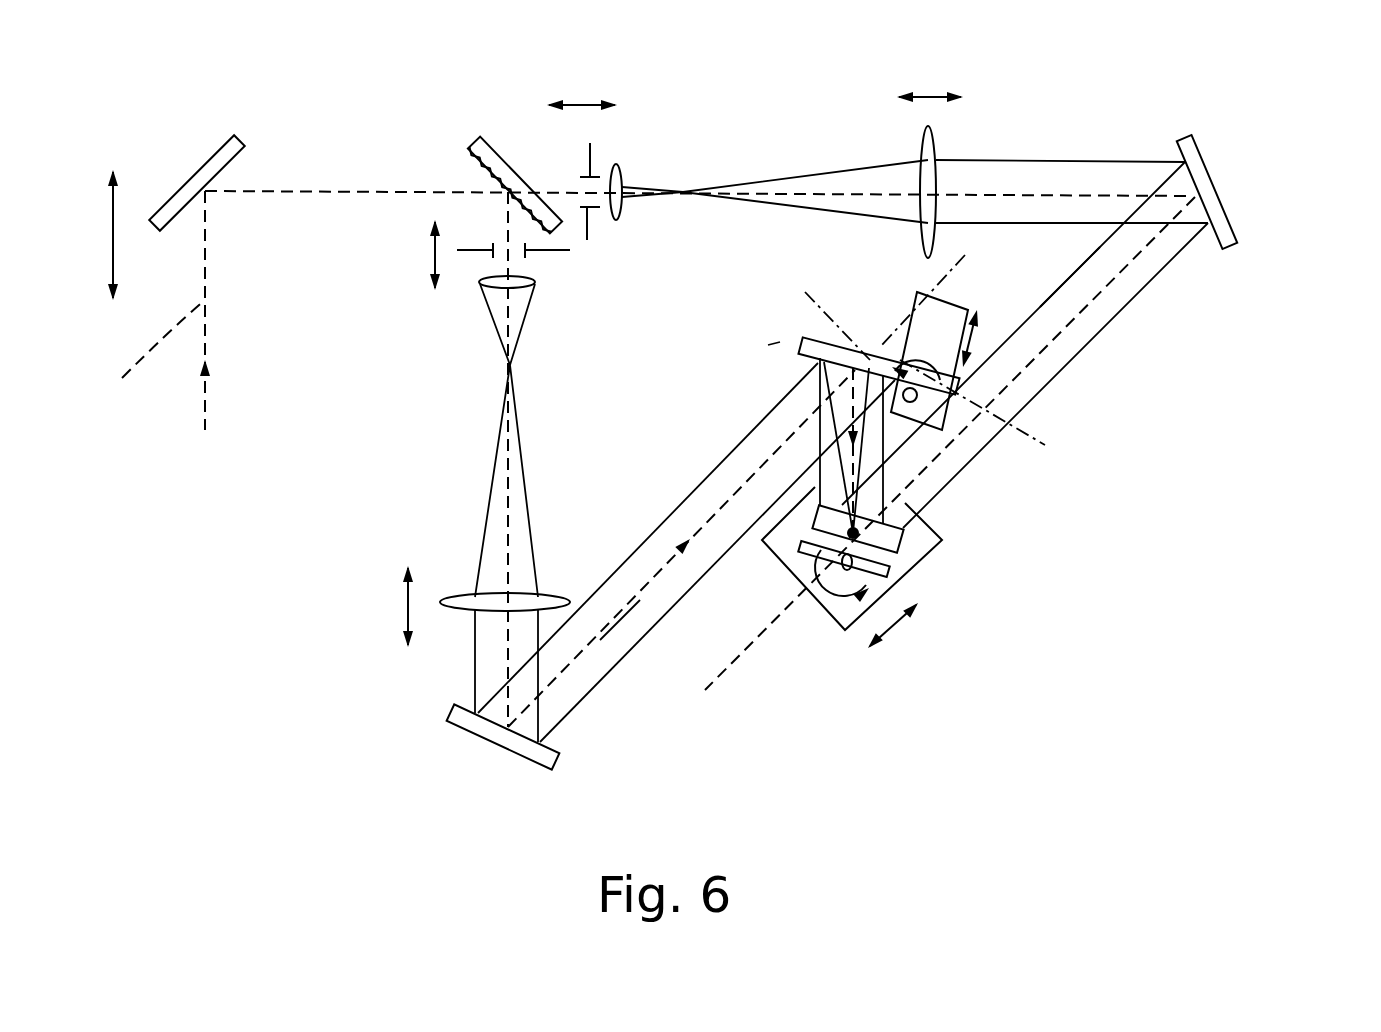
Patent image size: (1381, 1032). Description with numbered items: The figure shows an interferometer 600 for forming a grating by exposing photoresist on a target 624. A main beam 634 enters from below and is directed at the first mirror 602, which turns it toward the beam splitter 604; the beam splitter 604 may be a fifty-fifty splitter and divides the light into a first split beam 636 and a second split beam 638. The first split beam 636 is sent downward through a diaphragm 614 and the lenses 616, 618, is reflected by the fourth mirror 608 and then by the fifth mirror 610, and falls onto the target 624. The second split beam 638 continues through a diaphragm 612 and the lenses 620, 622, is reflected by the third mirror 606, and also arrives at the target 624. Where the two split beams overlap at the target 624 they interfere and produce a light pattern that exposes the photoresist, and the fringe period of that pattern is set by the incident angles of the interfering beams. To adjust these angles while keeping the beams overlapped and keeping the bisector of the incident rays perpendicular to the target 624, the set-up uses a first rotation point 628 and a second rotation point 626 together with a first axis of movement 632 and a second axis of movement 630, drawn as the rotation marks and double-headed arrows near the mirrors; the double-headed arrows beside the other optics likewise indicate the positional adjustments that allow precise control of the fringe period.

The optical system 600 is at (200, 584).
The input mirror 602 is at (221, 148).
The beam splitter 604 is at (492, 139).
The mirror 606 is at (1227, 213).
The mirror 608 is at (458, 730).
The mirror 610 is at (808, 344).
The pinhole aperture 612 is at (592, 157).
The pinhole aperture 614 is at (550, 252).
The lens 616 is at (482, 284).
The lens 618 is at (461, 611).
The lens 620 is at (622, 180).
The lens 622 is at (937, 135).
The mirror 624 is at (942, 548).
The rotation of mirror 626 is at (817, 573).
The pivot 628 is at (918, 397).
The mirror mount 630 is at (897, 627).
The optical element 632 is at (985, 350).
The input beam path 634 is at (141, 355).
The beam 636 is at (583, 697).
The beam 638 is at (1147, 288).